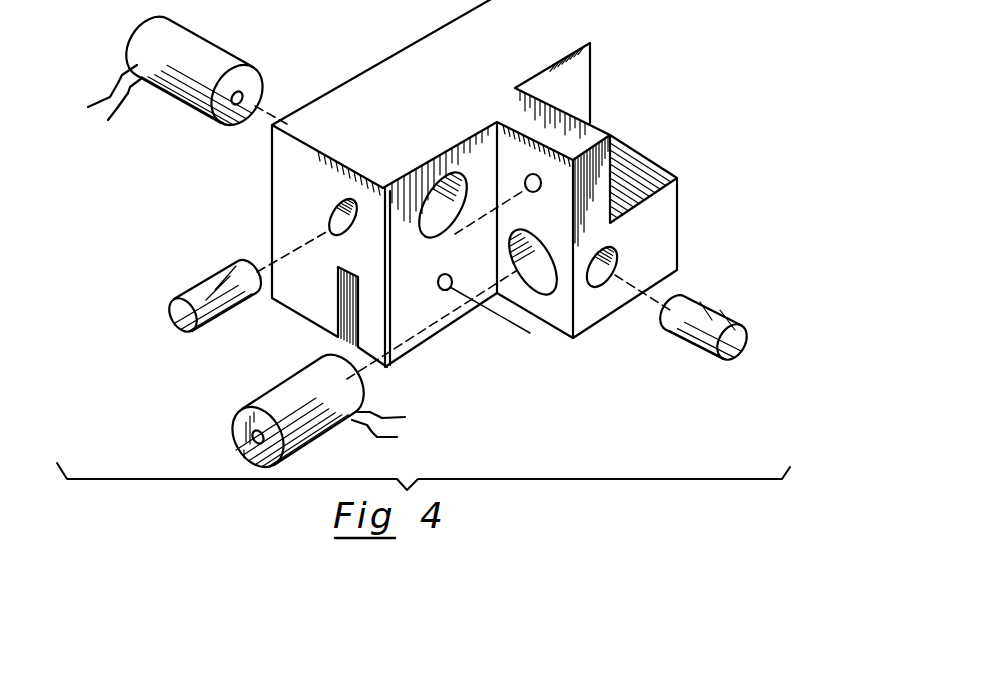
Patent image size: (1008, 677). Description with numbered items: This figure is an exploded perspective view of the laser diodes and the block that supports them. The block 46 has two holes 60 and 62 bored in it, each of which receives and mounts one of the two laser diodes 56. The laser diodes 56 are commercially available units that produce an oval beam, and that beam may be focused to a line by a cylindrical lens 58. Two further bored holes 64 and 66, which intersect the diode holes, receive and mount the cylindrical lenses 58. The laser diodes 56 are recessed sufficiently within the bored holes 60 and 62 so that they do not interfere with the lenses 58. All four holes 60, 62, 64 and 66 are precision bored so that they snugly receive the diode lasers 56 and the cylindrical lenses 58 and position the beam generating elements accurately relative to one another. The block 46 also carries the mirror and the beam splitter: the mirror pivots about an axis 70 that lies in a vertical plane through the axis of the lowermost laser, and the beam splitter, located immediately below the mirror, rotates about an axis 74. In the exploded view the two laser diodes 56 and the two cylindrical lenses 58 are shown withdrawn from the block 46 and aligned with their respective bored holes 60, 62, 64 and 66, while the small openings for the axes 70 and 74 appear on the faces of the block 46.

The block 46 is at (568, 33).
The laser diode 56 is at (219, 47).
The cylindrical lens 58 is at (208, 273).
The bored hole 60 is at (448, 173).
The bored hole 62 is at (537, 239).
The bored hole 64 is at (334, 211).
The bored hole 66 is at (603, 249).
The axis 70 is at (525, 185).
The axis 74 is at (512, 323).